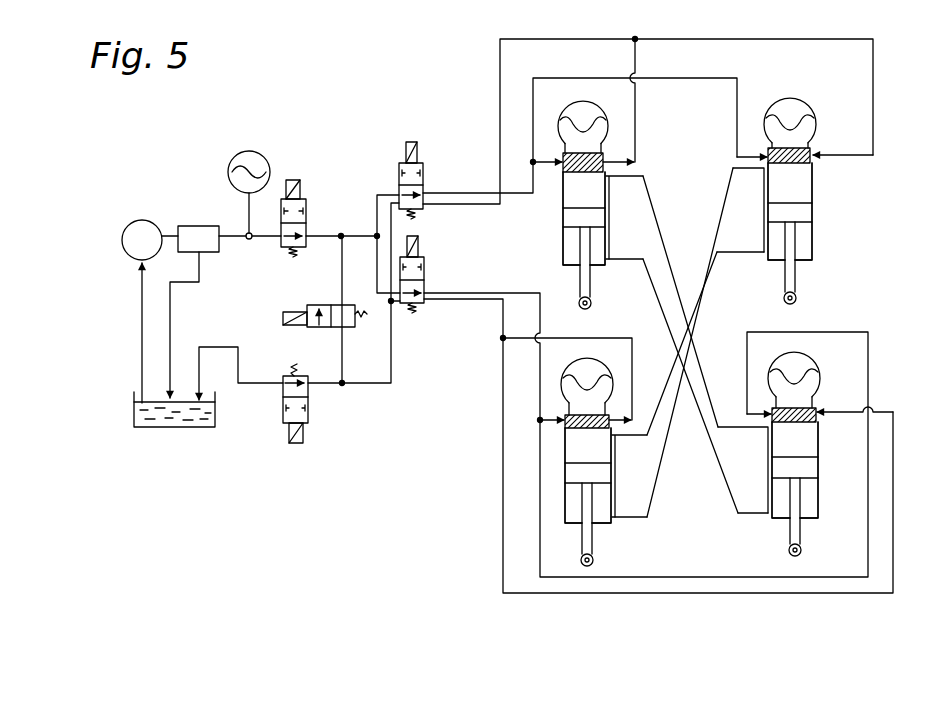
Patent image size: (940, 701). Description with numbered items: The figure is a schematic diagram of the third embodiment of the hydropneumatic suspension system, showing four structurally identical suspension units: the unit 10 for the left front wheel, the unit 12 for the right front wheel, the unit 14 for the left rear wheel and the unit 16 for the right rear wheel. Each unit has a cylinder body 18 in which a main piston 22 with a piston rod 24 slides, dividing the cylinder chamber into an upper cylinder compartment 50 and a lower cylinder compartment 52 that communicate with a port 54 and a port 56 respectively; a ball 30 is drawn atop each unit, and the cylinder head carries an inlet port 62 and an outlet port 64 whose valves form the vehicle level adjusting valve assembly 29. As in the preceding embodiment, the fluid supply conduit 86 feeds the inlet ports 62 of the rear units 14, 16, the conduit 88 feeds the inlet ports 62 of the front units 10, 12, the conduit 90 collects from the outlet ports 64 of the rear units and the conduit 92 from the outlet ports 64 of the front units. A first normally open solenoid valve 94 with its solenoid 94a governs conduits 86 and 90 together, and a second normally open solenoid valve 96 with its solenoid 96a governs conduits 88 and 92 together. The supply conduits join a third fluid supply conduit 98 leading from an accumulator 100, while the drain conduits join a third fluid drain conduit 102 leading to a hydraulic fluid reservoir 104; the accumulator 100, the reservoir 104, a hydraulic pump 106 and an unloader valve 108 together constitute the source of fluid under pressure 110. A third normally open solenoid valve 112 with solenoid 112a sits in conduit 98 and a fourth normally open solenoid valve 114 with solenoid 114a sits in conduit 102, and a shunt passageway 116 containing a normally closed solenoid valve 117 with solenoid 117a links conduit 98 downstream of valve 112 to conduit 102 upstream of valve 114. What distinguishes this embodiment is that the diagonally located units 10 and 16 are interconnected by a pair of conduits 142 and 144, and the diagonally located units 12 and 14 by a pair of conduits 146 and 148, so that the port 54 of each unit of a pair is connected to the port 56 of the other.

The hydropneumatic suspension unit 10 is at (560, 209).
The hydropneumatic suspension unit 12 is at (815, 200).
The hydropneumatic suspension unit 14 is at (616, 456).
The hydropneumatic suspension unit 16 is at (820, 447).
The cylinder body 18 is at (606, 200).
The main piston 22 is at (606, 220).
The piston rod 24 is at (591, 299).
The vehicle level adjusting valve assembly 29 is at (567, 147).
The ball 30 is at (597, 104).
The upper cylinder compartment 50 is at (596, 196).
The lower cylinder compartment 52 is at (572, 245).
The port 54 is at (609, 177).
The port 56 is at (611, 260).
The inlet port 62 is at (559, 171).
The outlet port 64 is at (604, 155).
The first fluid supply conduit 86 is at (377, 273).
The first fluid drain conduit 88 is at (377, 194).
The second fluid supply conduit 90 is at (456, 299).
The second fluid drain conduit 92 is at (472, 204).
The first normally open solenoid valve 94 is at (435, 273).
The solenoid 94a is at (418, 250).
The second normally open solenoid valve 96 is at (435, 175).
The solenoid 96a is at (418, 150).
The third fluid supply conduit 98 is at (330, 235).
The accumulator 100 is at (249, 152).
The third fluid drain conduit 102 is at (384, 384).
The hydraulic fluid reservoir 104 is at (198, 428).
The hydraulic pump 106 is at (146, 219).
The unloader valve 108 is at (199, 225).
The source of fluid under pressure 110 is at (165, 163).
The third normally open solenoid valve 112 is at (297, 217).
The solenoid 112a is at (300, 192).
The fourth normally open solenoid valve 114 is at (318, 412).
The solenoid 114a is at (305, 441).
The shunt passageway 116 is at (341, 283).
The normally closed solenoid valve 117 is at (309, 334).
The solenoid 117a is at (292, 326).
The conduit 142 is at (661, 235).
The conduit 144 is at (655, 292).
The conduit 146 is at (722, 218).
The conduit 148 is at (714, 258).